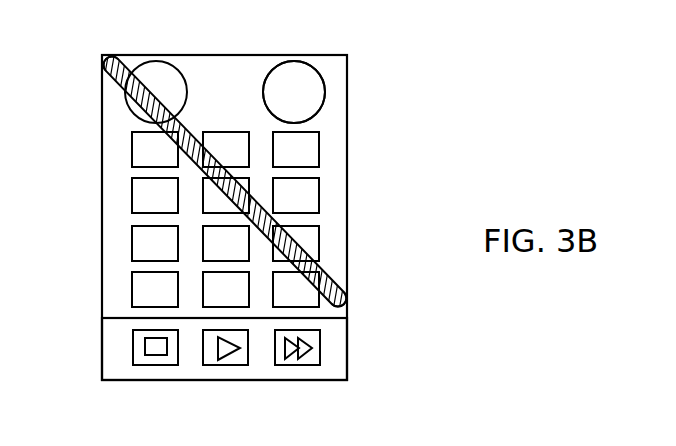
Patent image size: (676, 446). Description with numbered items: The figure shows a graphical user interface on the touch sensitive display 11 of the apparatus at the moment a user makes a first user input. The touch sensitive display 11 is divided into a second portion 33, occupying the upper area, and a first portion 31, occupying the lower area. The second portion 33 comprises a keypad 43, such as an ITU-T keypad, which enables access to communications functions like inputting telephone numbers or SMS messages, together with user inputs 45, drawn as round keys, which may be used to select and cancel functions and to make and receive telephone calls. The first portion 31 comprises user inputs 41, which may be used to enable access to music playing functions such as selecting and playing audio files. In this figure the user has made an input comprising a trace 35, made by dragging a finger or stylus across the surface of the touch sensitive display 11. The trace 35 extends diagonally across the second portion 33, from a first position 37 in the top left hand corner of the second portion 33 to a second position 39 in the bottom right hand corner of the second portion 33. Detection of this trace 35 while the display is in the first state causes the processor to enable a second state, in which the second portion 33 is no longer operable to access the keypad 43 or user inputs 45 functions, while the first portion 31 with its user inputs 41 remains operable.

The touch sensitive display 11 is at (352, 202).
The first portion 31 is at (115, 345).
The second portion 33 is at (335, 98).
The trace 35 is at (333, 287).
The first position 37 is at (99, 48).
The second position 39 is at (358, 306).
The user inputs 41 is at (297, 360).
The keypad 43 is at (132, 195).
The user inputs 45 is at (155, 61).